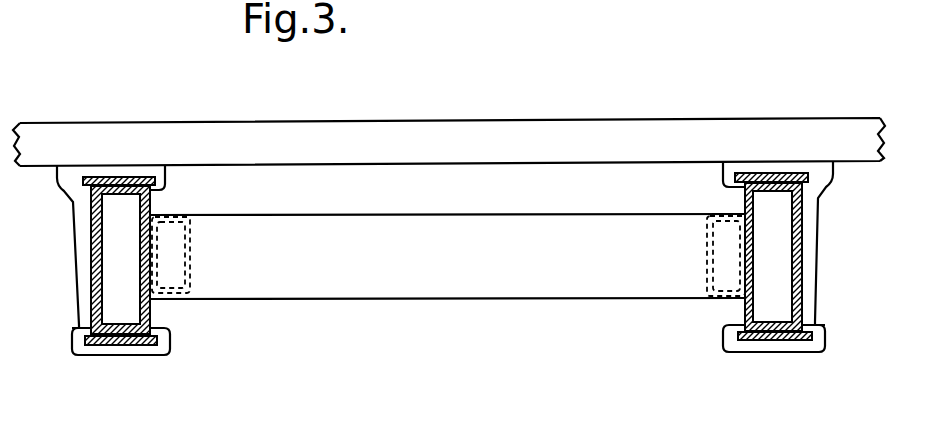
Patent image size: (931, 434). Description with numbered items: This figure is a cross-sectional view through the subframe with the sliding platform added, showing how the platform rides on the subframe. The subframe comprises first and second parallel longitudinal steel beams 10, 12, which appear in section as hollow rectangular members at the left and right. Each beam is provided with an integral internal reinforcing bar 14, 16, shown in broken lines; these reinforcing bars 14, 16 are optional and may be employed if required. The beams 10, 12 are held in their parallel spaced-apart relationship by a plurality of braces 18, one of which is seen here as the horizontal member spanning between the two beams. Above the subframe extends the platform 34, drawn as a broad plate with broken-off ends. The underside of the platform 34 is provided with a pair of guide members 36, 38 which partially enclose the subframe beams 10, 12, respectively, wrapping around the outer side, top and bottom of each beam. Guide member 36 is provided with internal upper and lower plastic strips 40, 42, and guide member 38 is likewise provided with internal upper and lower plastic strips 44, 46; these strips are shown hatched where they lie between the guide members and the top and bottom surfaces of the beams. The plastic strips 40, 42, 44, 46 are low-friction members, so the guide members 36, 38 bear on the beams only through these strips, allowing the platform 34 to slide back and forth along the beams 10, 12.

The first longitudinal steel beam 10 is at (150, 194).
The second longitudinal steel beam 12 is at (745, 198).
The internal reinforcing bar 14 is at (190, 272).
The internal reinforcing bar 16 is at (707, 265).
The brace 18 is at (403, 293).
The platform 34 is at (447, 123).
The guide member 36 is at (82, 252).
The guide member 38 is at (815, 253).
The upper plastic strip 40 is at (140, 177).
The lower plastic strip 42 is at (133, 345).
The upper plastic strip 44 is at (768, 176).
The lower plastic strip 46 is at (778, 340).